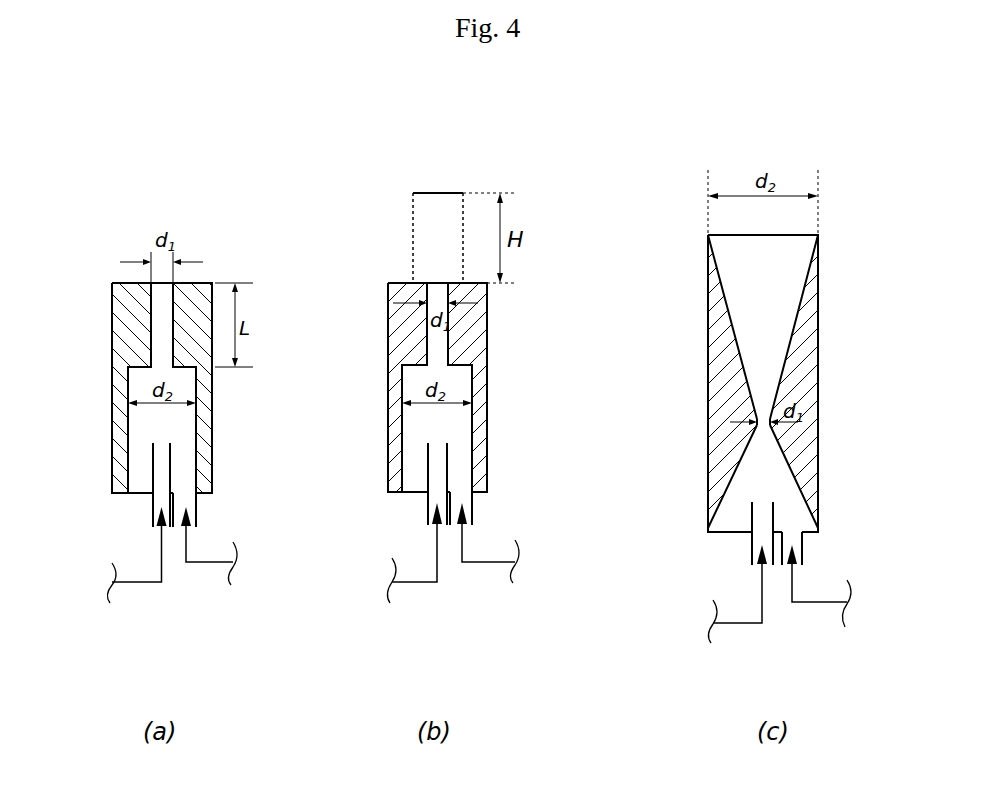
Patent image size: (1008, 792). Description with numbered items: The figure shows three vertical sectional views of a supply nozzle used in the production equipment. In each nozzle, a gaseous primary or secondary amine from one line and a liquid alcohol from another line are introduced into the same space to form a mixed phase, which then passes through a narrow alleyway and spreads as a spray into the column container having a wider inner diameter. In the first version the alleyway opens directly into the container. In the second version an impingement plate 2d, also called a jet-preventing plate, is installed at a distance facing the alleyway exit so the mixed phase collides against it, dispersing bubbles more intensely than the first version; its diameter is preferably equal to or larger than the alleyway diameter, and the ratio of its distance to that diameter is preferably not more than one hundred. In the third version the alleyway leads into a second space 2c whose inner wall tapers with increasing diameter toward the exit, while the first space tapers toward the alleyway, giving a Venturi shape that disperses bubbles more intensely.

The second space 2c is at (748, 275).
The impingement plate 2d is at (432, 193).